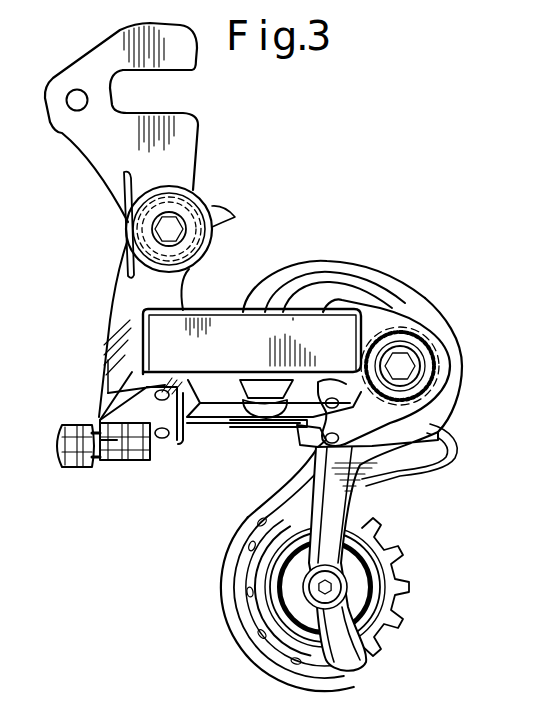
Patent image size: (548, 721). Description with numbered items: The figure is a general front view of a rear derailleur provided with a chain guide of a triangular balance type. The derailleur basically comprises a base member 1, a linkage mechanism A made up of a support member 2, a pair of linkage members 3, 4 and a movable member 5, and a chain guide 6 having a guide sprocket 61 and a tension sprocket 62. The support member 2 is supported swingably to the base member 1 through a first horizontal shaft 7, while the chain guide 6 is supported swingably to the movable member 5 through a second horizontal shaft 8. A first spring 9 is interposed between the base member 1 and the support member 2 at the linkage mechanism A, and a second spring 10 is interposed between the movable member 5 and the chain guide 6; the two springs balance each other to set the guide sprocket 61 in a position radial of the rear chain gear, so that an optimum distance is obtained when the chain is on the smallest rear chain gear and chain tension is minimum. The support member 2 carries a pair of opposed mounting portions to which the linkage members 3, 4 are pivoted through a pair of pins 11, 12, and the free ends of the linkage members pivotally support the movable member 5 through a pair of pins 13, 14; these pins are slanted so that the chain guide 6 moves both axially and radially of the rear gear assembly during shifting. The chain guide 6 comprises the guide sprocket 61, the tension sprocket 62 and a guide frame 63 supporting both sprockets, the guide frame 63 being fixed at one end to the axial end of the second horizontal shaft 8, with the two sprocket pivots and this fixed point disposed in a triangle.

The base member 1 is at (73, 128).
The support member 2 is at (115, 300).
The linkage member 3 is at (228, 318).
The linkage member 4 is at (220, 422).
The movable member 5 is at (377, 327).
The chain guide 6 is at (353, 492).
The first horizontal shaft 7 is at (175, 222).
The second horizontal shaft 8 is at (410, 365).
The first spring 9 is at (130, 217).
The second spring 10 is at (437, 383).
The pin 11 is at (150, 402).
The pin 12 is at (158, 438).
The pin 13 is at (313, 430).
The pin 14 is at (330, 448).
The guide sprocket 61 is at (323, 297).
The tension sprocket 62 is at (407, 607).
The guide frame 63 is at (383, 437).
The linkage mechanism A is at (293, 320).